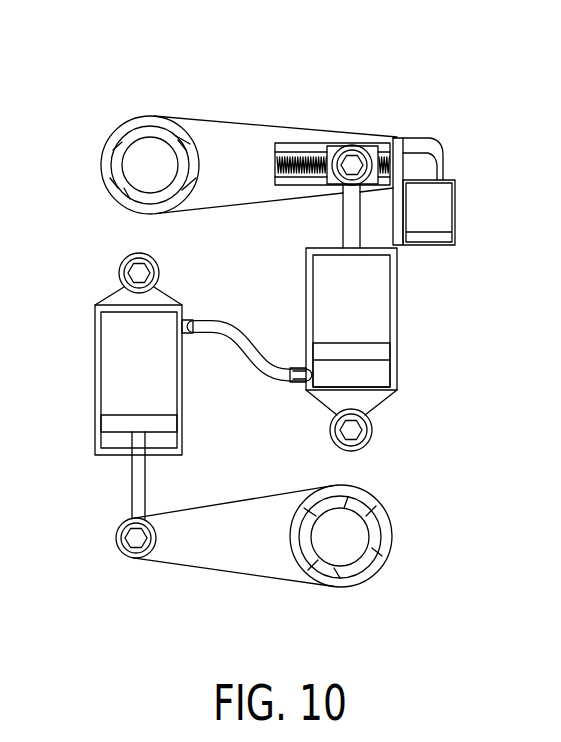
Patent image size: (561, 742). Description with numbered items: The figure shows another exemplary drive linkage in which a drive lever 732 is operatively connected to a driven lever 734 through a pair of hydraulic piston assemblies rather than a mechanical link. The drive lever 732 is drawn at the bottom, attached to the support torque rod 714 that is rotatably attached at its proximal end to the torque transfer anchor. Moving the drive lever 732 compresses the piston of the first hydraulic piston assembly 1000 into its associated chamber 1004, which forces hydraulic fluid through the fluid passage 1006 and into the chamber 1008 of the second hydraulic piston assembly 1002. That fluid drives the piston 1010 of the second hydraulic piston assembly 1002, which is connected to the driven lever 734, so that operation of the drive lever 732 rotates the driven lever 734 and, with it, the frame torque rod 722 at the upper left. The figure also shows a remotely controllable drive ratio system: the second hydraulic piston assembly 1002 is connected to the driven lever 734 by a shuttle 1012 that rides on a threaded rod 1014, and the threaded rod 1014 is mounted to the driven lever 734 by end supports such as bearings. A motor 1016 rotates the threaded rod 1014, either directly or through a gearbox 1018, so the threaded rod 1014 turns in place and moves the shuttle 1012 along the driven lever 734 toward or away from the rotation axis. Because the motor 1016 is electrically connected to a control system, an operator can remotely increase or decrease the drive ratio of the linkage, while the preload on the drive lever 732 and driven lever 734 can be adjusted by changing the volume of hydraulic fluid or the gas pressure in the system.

The frame torque rod 722 is at (147, 128).
The driven lever 734 is at (296, 135).
The threaded rod 1014 is at (318, 152).
The shuttle 1012 is at (370, 144).
The gearbox 1018 is at (430, 165).
The motor 1016 is at (437, 208).
The second hydraulic piston assembly 1002 is at (397, 315).
The piston 1010 is at (378, 351).
The chamber 1008 is at (383, 382).
The fluid passage 1006 is at (224, 330).
The chamber 1004 is at (118, 334).
The first hydraulic piston assembly 1000 is at (95, 386).
The drive lever 732 is at (222, 558).
The support torque rod 714 is at (370, 548).